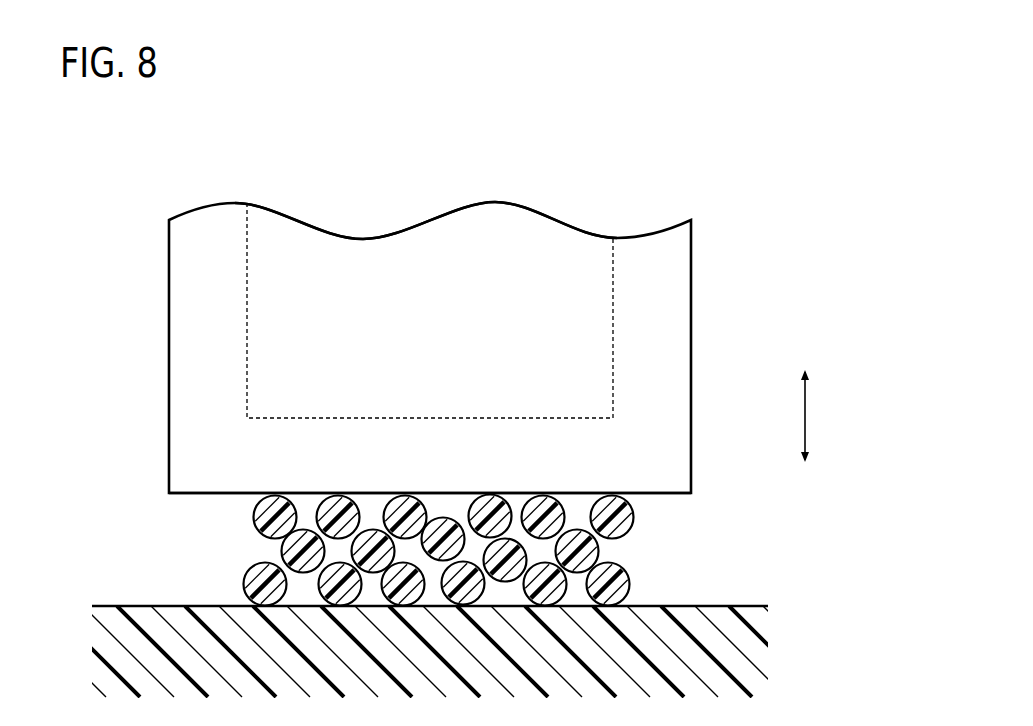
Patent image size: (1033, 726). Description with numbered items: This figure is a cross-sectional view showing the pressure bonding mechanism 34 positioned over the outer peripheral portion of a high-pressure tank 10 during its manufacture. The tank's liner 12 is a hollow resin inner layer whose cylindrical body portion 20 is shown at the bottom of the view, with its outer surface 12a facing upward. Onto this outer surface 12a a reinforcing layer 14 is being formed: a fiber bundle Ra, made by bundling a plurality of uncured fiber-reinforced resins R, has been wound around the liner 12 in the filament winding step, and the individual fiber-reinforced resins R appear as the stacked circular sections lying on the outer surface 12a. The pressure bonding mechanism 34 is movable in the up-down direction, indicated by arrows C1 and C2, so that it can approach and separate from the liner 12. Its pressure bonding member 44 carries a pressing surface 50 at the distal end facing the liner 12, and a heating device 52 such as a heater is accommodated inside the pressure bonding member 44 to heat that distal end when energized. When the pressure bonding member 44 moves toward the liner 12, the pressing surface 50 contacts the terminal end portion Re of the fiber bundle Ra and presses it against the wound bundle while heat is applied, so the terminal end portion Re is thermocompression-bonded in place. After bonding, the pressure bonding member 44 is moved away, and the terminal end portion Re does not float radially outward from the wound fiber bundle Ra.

The pressure bonding mechanism 34 is at (419, 346).
The pressure bonding member 44 is at (485, 235).
The heating device 52 is at (267, 307).
The pressing surface 50 is at (187, 494).
The reinforcing layer 14 is at (425, 515).
The high-pressure tank 10 is at (465, 515).
The liner 12 is at (427, 624).
The body portion 20 is at (427, 632).
The outer surface 12a is at (133, 603).
The fiber reinforced resin R is at (442, 515).
The terminal end portion Re is at (373, 506).
The fiber bundle Ra is at (627, 510).
The arrow C1 is at (807, 430).
The arrow C2 is at (807, 417).